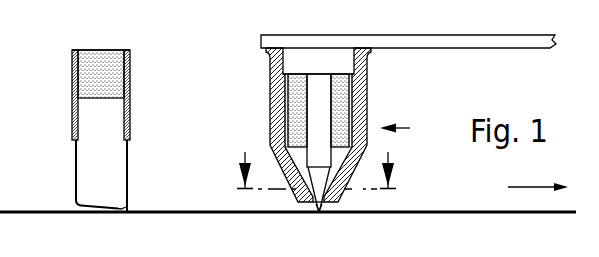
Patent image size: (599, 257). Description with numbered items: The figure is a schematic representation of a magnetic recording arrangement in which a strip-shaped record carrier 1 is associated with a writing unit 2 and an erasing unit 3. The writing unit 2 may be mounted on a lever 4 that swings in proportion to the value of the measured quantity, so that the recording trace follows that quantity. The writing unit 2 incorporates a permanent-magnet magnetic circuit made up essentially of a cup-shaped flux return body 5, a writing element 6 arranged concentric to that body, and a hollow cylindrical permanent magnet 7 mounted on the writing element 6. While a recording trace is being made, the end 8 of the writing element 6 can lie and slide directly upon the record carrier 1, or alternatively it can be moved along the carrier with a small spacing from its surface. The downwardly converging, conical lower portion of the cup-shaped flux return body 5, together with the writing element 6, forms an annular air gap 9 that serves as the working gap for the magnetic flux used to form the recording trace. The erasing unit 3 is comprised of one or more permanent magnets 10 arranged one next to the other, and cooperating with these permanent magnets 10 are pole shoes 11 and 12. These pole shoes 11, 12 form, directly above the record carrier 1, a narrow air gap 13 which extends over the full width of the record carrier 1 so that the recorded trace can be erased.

The record carrier 1 is at (448, 214).
The writing unit 2 is at (474, 155).
The erasing unit 3 is at (62, 156).
The lever 4 is at (470, 49).
The cup-shaped flux return body 5 is at (368, 75).
The writing element 6 is at (321, 108).
The hollow cylindrical permanent magnet 7 is at (285, 107).
The end of the writing element 8 is at (320, 206).
The annular air gap 9 is at (312, 207).
The permanent magnets 10 is at (100, 50).
The pole shoe 11 is at (130, 133).
The pole shoe 12 is at (72, 133).
The narrow air gap 13 is at (129, 203).